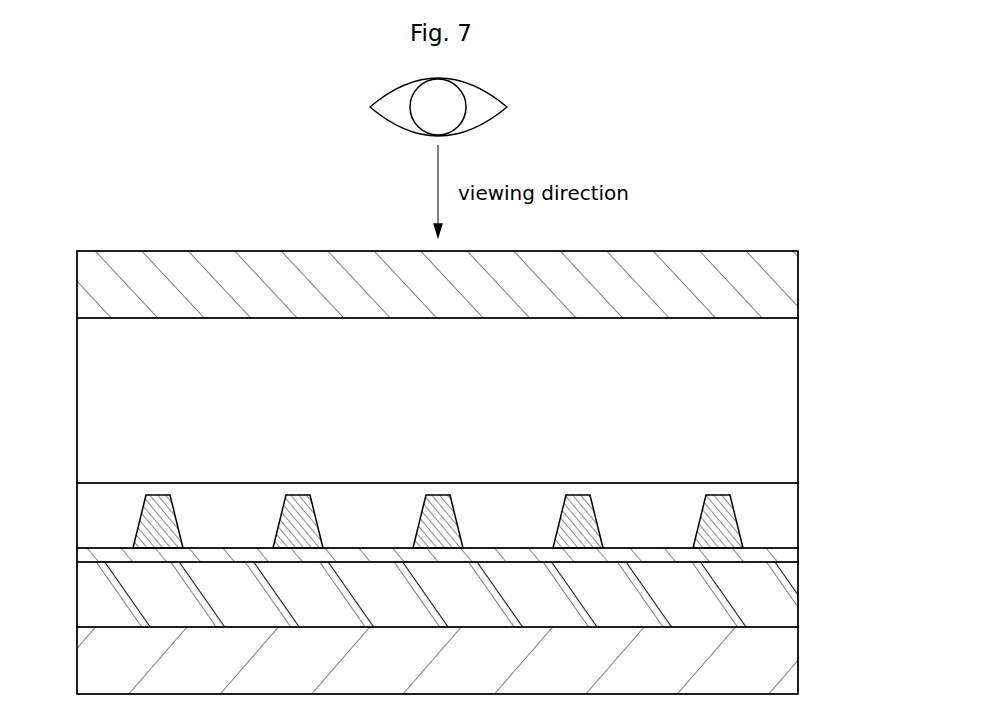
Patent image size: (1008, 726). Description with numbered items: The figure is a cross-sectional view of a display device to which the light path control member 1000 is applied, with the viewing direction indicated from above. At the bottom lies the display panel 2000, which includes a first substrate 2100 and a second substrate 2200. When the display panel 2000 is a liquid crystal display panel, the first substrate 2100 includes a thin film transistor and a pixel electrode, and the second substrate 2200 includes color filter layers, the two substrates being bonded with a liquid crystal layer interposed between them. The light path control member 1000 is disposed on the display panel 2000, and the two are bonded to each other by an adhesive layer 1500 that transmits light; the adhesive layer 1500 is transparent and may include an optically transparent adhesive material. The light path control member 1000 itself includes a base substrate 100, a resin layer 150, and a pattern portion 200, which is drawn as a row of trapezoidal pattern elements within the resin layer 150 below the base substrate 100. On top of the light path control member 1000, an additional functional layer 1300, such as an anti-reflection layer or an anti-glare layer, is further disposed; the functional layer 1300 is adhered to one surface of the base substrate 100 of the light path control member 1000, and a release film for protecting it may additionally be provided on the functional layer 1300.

The functional layer 1300 is at (798, 283).
The base substrate 100 is at (798, 400).
The light path control member 1000 is at (496, 433).
The pattern portion 200 is at (499, 514).
The resin layer 150 is at (798, 515).
The adhesive layer 1500 is at (77, 553).
The second substrate 2200 is at (798, 595).
The display panel 2000 is at (499, 628).
The first substrate 2100 is at (798, 660).